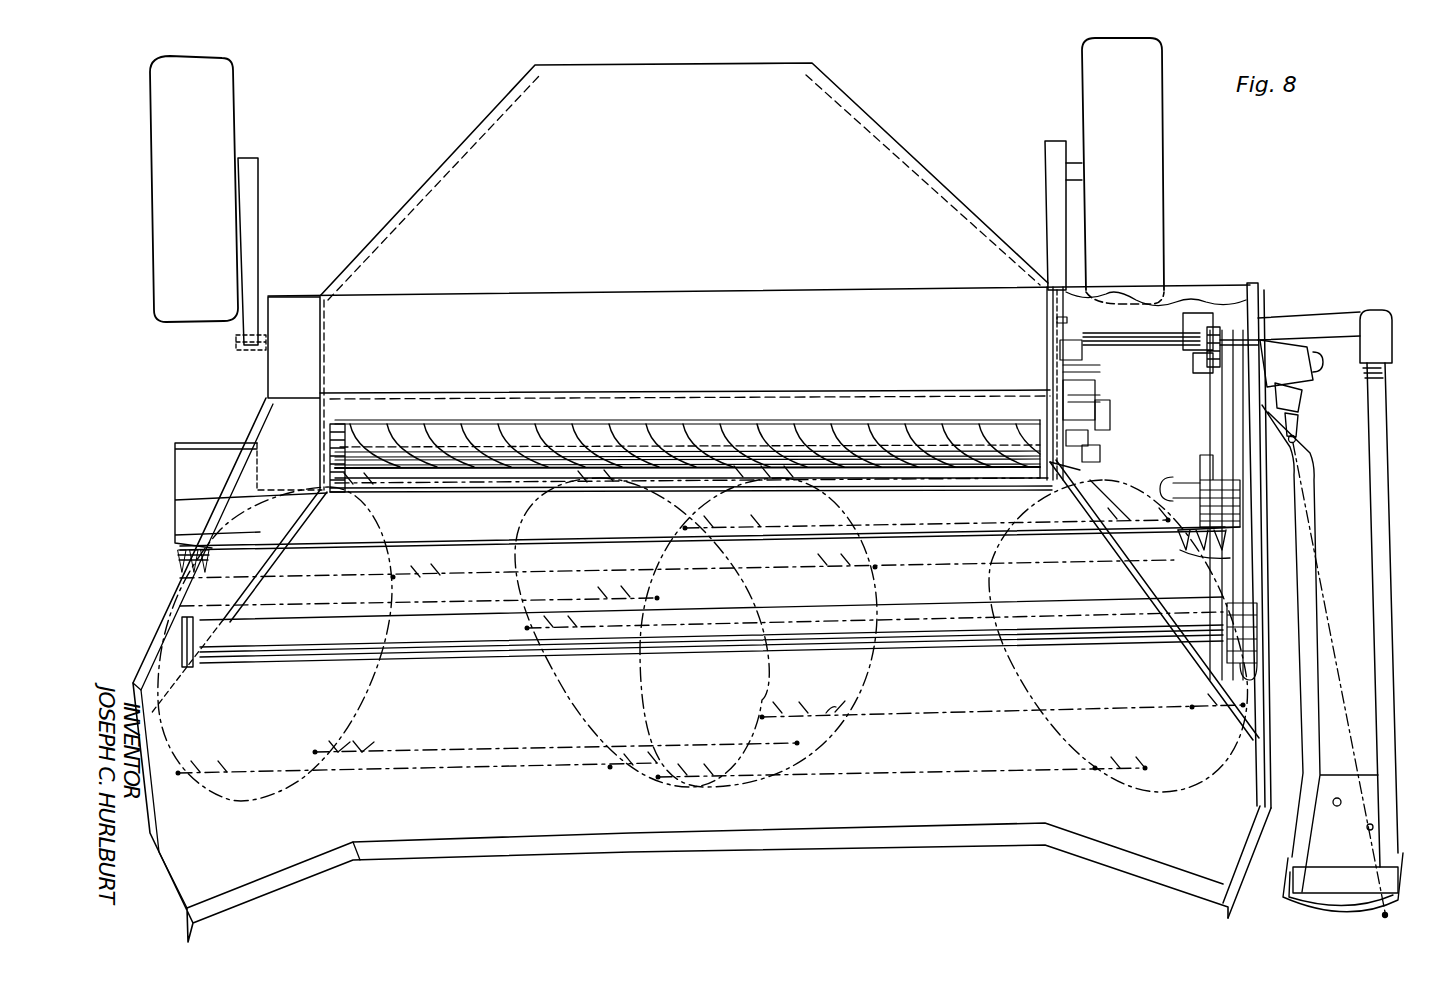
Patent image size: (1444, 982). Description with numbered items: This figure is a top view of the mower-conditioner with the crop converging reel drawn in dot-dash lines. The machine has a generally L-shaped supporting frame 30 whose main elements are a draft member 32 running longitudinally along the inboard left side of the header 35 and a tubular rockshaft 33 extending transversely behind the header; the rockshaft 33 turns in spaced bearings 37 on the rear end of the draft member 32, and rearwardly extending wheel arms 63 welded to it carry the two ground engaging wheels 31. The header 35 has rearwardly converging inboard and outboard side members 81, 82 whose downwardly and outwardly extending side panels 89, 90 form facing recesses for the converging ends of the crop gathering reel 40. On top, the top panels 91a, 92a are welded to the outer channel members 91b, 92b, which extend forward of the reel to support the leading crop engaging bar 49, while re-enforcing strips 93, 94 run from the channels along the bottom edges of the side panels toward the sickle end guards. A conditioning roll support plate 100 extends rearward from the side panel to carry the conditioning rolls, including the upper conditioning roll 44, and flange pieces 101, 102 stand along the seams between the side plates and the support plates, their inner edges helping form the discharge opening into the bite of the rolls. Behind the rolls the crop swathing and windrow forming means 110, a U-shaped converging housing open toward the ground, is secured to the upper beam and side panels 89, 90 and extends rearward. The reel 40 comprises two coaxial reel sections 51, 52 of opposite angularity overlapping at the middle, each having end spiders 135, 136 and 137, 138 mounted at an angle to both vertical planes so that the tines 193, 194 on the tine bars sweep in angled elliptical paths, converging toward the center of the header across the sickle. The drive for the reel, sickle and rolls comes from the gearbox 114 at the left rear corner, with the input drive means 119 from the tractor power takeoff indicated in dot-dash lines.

The supporting frame 30 is at (1266, 305).
The ground engaging wheels 31 is at (178, 314).
The draft member 32 is at (1373, 408).
The rockshaft 33 is at (1320, 318).
The header 35 is at (152, 581).
The bearings 37 is at (1189, 330).
The crop gathering reel 40 is at (614, 784).
The upper conditioning roll 44 is at (684, 417).
The leading crop engaging bar 49 is at (612, 848).
The reel section 51 is at (834, 778).
The reel section 52 is at (500, 770).
The wheel arms 63 is at (260, 202).
The inboard side member 81 is at (1179, 290).
The outboard side member 82 is at (274, 408).
The side panel 89 is at (1082, 456).
The side panel 90 is at (317, 413).
The top panel 91a is at (1214, 655).
The outer channel member 91b is at (1263, 852).
The top panel 92a is at (160, 606).
The outer channel member 92b is at (136, 676).
The re-enforcing strip 93 is at (1257, 822).
The re-enforcing strip 94 is at (163, 855).
The conditioning roll support plate 100 is at (330, 444).
The flange piece 101 is at (1105, 462).
The flange piece 102 is at (330, 478).
The crop swathing and windrow forming means 110 is at (462, 148).
The gearbox 114 is at (1278, 344).
The input drive means 119 is at (1321, 594).
The end spider 135 is at (1198, 771).
The end spider 136 is at (562, 692).
The end spider 137 is at (642, 708).
The end spider 138 is at (374, 684).
The tines 193 is at (832, 706).
The tines 194 is at (356, 746).